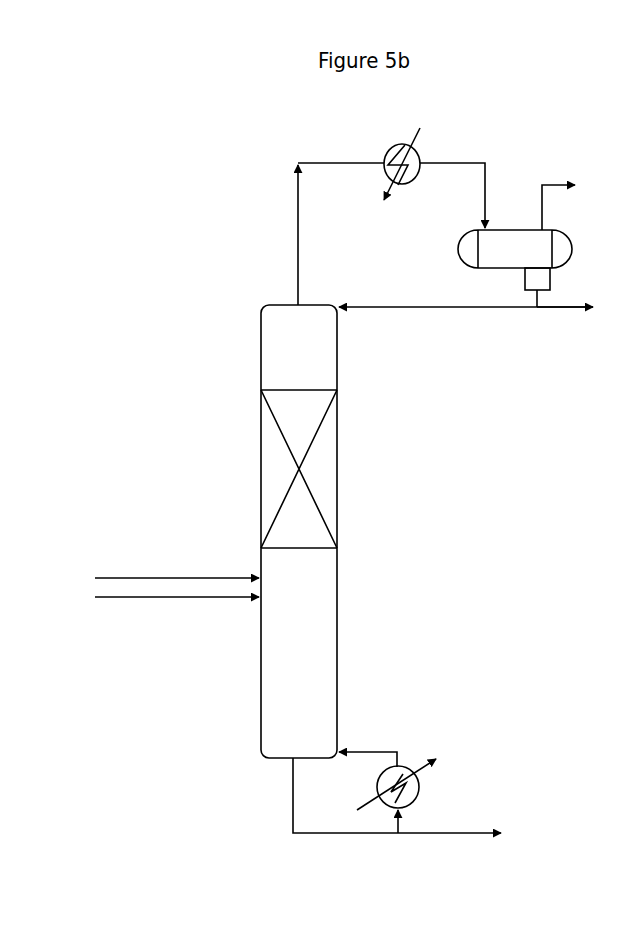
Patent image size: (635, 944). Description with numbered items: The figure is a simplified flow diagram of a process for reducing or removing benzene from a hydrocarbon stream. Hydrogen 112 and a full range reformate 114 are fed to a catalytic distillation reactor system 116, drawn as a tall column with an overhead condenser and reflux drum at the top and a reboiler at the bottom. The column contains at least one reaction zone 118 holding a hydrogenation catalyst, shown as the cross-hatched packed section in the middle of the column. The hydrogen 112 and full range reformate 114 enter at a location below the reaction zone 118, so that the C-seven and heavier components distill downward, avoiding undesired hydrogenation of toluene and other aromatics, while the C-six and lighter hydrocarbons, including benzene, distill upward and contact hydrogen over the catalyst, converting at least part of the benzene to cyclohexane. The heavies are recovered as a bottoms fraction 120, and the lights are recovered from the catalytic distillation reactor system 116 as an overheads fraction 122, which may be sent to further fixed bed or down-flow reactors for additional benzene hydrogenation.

The hydrogen 112 is at (117, 600).
The full range reformate 114 is at (120, 575).
The catalytic distillation reactor system 116 is at (262, 311).
The reaction zone 118 is at (277, 465).
The bottoms fraction 120 is at (456, 835).
The overheads fraction 122 is at (566, 315).